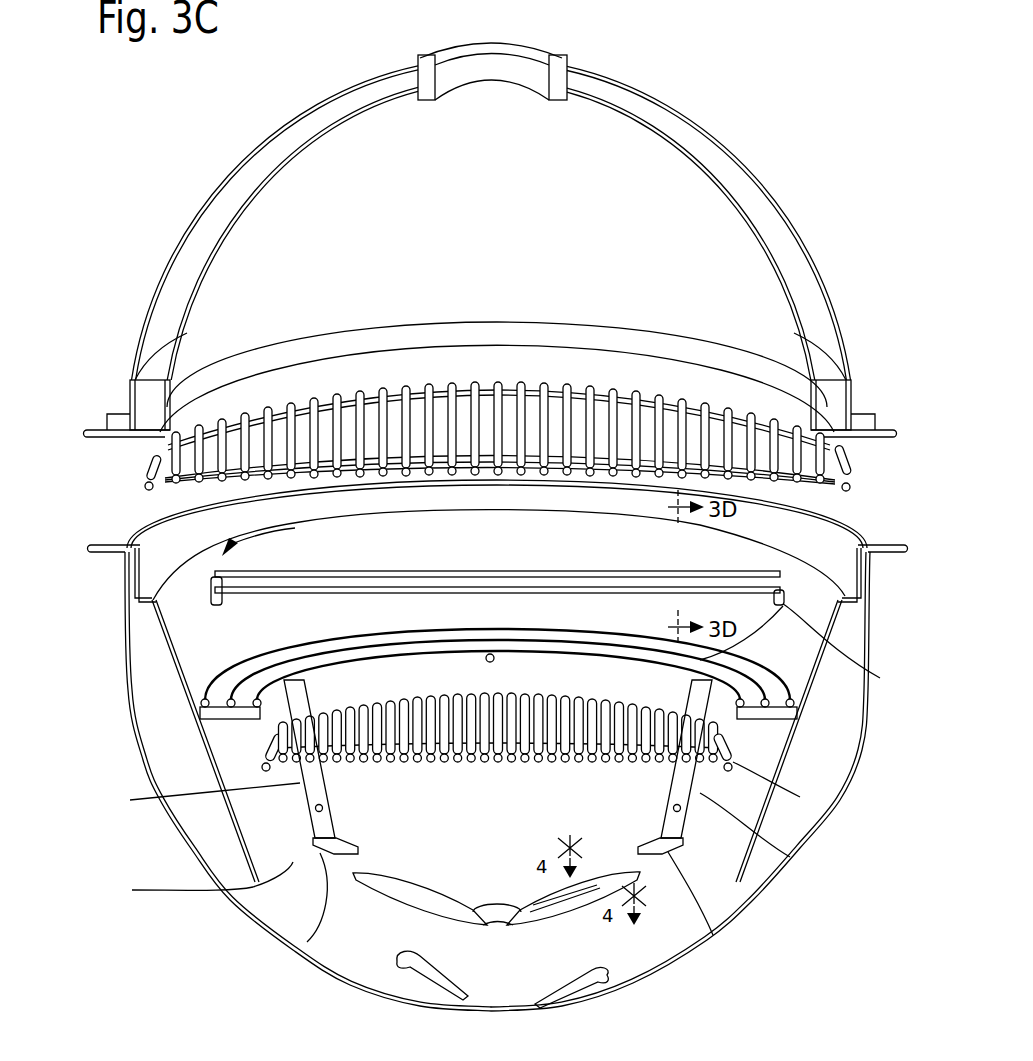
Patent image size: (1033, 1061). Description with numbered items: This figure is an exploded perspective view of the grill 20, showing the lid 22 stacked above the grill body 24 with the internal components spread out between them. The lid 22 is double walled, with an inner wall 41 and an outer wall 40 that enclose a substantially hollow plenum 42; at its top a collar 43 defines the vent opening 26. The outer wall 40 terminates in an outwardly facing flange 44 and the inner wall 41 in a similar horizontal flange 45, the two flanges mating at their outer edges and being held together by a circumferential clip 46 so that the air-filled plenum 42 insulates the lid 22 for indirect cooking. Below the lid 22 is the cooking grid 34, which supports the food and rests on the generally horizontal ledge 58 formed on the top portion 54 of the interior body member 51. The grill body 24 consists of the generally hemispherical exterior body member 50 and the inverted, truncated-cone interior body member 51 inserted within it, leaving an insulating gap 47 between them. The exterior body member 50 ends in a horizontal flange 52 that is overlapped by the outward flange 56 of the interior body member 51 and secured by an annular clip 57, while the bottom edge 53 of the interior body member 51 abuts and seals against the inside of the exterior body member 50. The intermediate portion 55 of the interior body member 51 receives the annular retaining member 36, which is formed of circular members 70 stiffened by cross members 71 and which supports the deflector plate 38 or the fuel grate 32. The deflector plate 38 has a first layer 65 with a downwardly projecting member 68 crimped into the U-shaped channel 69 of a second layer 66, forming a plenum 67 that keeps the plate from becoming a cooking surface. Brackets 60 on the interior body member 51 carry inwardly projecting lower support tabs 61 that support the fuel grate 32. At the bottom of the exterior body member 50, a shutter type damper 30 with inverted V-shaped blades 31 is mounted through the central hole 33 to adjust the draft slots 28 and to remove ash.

The grill 20 is at (725, 70).
The lid 22 is at (163, 240).
The grill body 24 is at (895, 690).
The vent opening 26 is at (535, 40).
The drafts (air intake slots) 28 is at (640, 978).
The damper 30 is at (355, 912).
The blades 31 is at (372, 912).
The fuel grate 32 is at (800, 797).
The central hole 33 is at (505, 1010).
The cooking grid 34 is at (145, 483).
The annular retaining member 36 is at (200, 692).
The deflector plate 38 is at (215, 558).
The outer wall 40 is at (255, 148).
The inner wall 41 is at (228, 222).
The plenum 42 is at (180, 296).
The collar 43 is at (450, 70).
The flange 44 is at (105, 430).
The flange 45 is at (124, 422).
The circumferential clip 46 is at (890, 424).
The gap 47 is at (152, 738).
The exterior body member 50 is at (810, 840).
The interior body member 51 is at (160, 833).
The flange 52 is at (880, 553).
The bottom edge 53 is at (132, 890).
The top portion 54 is at (840, 578).
The intermediate portion 55 is at (736, 762).
The flange 56 is at (105, 525).
The annular clip 57 is at (878, 528).
The ledge 58 is at (160, 590).
The brackets 60 is at (230, 818).
The lower support tab 61 is at (288, 908).
The first layer 65 is at (758, 562).
The second layer 66 is at (300, 617).
The plenum 67 is at (210, 604).
The downwardly projecting member 68 is at (212, 578).
The U-shaped channel 69 is at (795, 628).
The circular members 70 is at (880, 678).
The cross members 71 is at (778, 716).